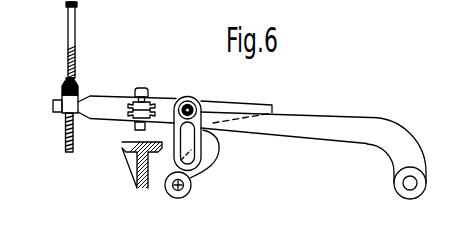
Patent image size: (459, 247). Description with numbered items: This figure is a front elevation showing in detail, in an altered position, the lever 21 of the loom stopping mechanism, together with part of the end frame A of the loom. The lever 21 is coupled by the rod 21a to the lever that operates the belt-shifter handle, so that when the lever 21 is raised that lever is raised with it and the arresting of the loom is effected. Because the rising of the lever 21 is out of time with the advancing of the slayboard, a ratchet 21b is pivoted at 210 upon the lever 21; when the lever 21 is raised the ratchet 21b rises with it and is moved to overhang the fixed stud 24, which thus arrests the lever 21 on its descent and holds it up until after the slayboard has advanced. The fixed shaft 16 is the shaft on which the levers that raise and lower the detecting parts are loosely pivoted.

The rod 21a is at (77, 63).
The lever 21 is at (300, 123).
The pivot 210 is at (204, 88).
The ratchet 21b is at (211, 146).
The fixed stud 24 is at (173, 187).
The fixed shaft 16 is at (404, 186).
The end frame A is at (138, 174).